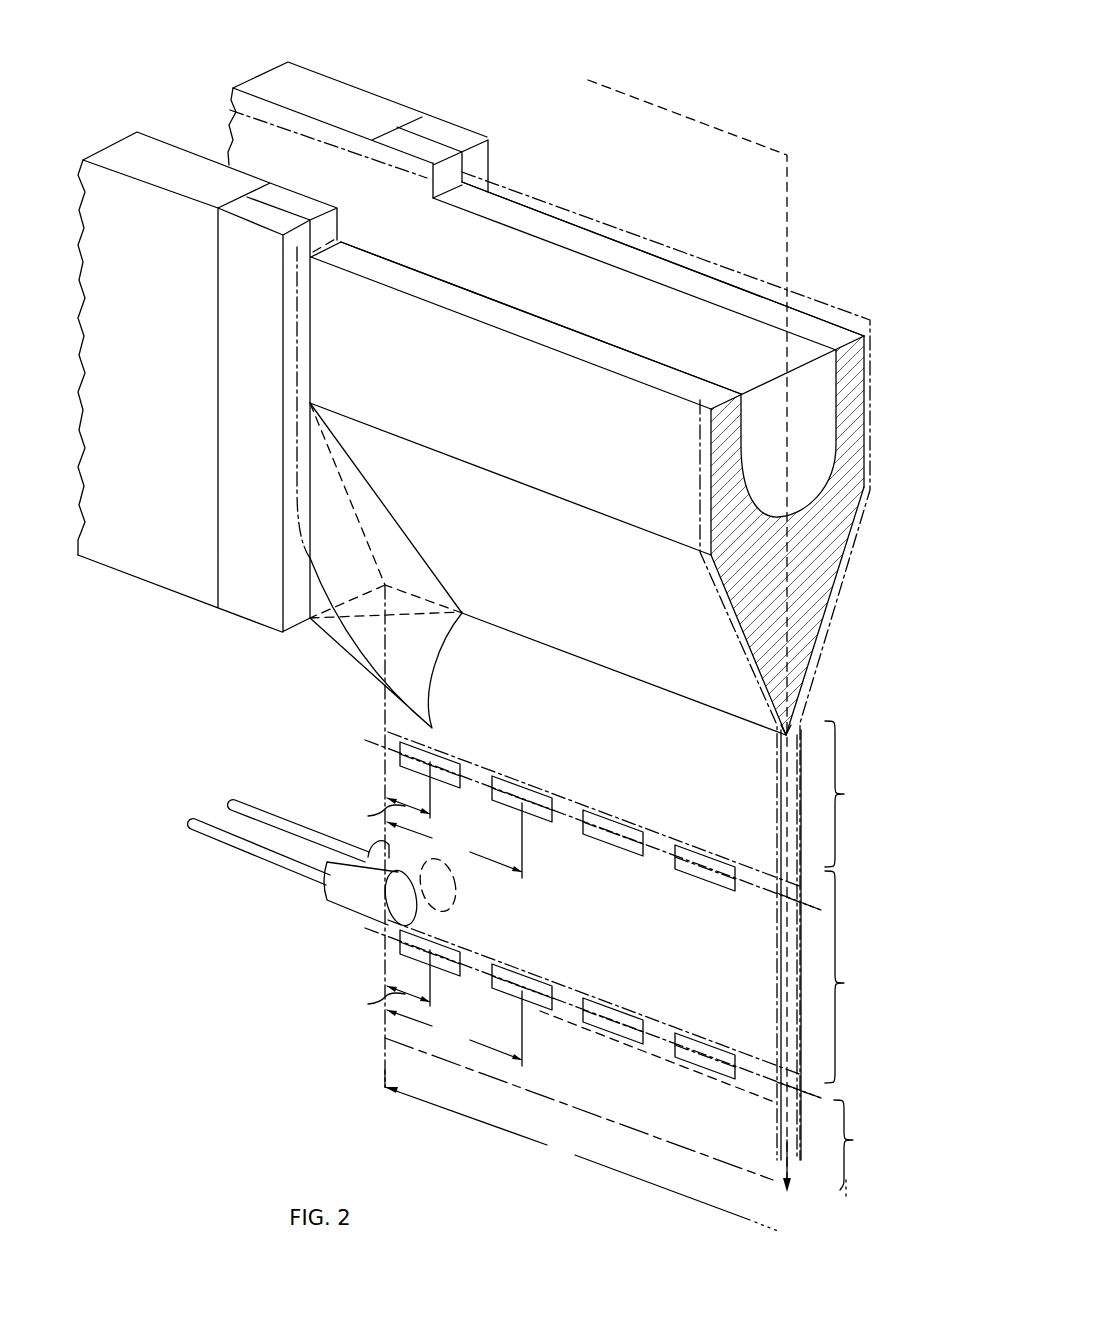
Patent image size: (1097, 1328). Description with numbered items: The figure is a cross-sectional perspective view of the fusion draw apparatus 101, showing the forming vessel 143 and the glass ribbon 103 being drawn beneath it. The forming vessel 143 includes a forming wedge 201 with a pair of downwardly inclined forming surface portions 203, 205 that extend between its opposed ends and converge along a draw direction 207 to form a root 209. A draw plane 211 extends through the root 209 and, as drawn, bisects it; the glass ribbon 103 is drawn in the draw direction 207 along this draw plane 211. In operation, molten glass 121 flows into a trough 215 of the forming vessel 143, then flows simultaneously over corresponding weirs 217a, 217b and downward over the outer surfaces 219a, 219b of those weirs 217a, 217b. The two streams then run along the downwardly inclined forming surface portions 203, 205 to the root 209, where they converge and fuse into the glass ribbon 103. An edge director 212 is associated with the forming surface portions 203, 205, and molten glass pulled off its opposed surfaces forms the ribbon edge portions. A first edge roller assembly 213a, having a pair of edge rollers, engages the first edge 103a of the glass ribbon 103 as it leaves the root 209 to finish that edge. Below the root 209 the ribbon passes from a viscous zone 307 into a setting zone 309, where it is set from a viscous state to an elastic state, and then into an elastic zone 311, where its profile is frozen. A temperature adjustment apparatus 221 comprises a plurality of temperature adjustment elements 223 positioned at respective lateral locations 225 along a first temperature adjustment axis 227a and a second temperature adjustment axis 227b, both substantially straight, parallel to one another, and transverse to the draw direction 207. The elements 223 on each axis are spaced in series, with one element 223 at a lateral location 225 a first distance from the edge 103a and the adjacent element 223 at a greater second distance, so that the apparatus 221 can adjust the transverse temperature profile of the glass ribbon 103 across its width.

The fusion draw apparatus 101 is at (753, 98).
The molten glass 121 is at (322, 145).
The forming wedge 201 is at (588, 200).
The draw plane 211 is at (788, 177).
The forming vessel 143 is at (840, 253).
The weir 217a is at (542, 330).
The weir 217b is at (660, 268).
The outer surface of weir 219a is at (710, 487).
The outer surface of weir 219b is at (865, 375).
The trough 215 is at (833, 422).
The downwardly inclined forming surface portion 203 is at (760, 678).
The downwardly inclined forming surface portion 205 is at (815, 652).
The root 209 is at (763, 732).
The edge director 212 is at (350, 663).
The draw direction 207 is at (792, 1183).
The temperature adjustment apparatus 221 is at (285, 773).
The temperature adjustment element 223 is at (402, 759).
The lateral location 225 is at (430, 763).
The glass ribbon 103 is at (688, 1034).
The edge of glass ribbon 103a is at (385, 1048).
The edge roller assembly 213a is at (325, 917).
The viscous zone 307 is at (861, 794).
The setting zone 309 is at (861, 977).
The elastic zone 311 is at (868, 1150).
The first temperature adjustment axis 227a is at (813, 904).
The second temperature adjustment axis 227b is at (817, 1096).